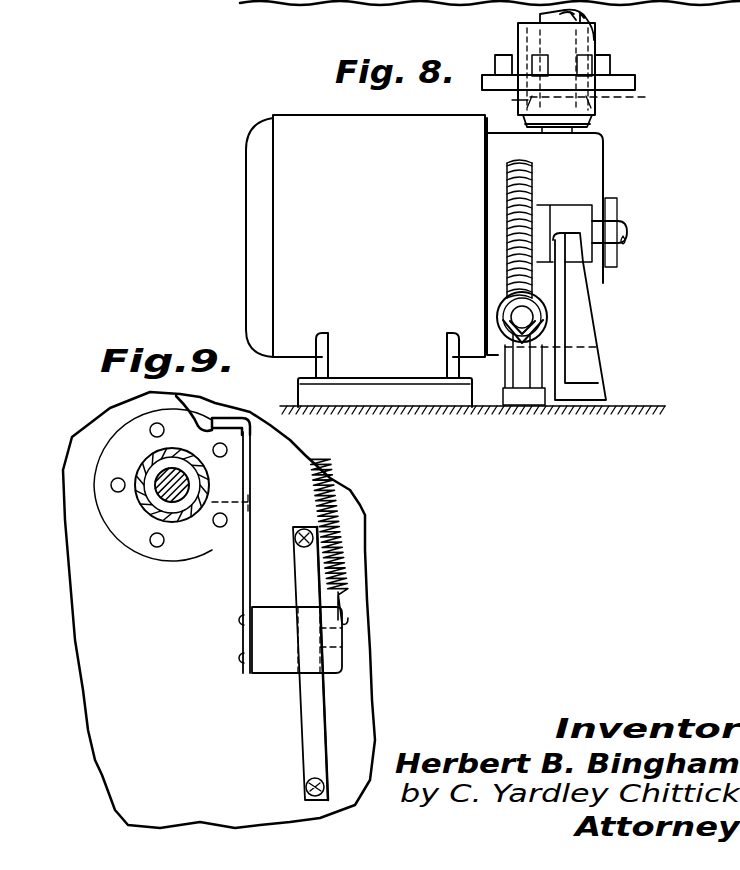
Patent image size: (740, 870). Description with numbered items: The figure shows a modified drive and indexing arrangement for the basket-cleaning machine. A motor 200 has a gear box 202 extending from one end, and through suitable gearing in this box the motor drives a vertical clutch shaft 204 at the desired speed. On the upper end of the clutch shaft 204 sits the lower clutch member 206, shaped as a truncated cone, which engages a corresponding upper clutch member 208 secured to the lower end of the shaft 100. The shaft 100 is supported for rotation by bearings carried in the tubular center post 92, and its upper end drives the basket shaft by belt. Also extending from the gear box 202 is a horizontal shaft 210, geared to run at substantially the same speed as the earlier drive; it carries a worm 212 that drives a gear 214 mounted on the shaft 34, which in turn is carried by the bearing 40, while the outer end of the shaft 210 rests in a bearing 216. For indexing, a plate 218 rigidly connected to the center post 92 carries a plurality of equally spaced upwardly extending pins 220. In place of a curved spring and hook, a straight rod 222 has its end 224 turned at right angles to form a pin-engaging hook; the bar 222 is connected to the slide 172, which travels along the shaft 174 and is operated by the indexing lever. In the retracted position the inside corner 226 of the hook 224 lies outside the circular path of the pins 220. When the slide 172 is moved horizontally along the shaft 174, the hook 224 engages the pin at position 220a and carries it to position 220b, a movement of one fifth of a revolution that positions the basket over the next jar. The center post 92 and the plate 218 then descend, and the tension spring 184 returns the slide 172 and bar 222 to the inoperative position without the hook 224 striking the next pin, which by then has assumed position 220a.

In FIG. 8, the shaft 34 is at (612, 228).
In FIG. 8, the bearing 40 is at (590, 366).
In FIG. 8, the center post 92 is at (597, 40).
In FIG. 9, the center post 92 is at (145, 460).
In FIG. 8, the shaft 100 is at (575, 14).
In FIG. 9, the shaft 100 is at (160, 492).
In FIG. 9, the slide 172 is at (275, 663).
In FIG. 9, the shaft 174 is at (310, 728).
In FIG. 9, the tension spring 184 is at (340, 515).
In FIG. 8, the motor 200 is at (290, 193).
In FIG. 8, the gear box 202 is at (600, 291).
In FIG. 8, the vertical clutch shaft 204 is at (580, 133).
In FIG. 8, the lower clutch member 206 is at (592, 120).
In FIG. 8, the upper clutch member 208 is at (605, 98).
In FIG. 8, the horizontal shaft 210 is at (527, 317).
In FIG. 8, the worm 212 is at (480, 302).
In FIG. 8, the gear 214 is at (505, 183).
In FIG. 8, the bearing 216 is at (511, 365).
In FIG. 8, the plate 218 is at (636, 84).
In FIG. 8, the pins 220 is at (612, 65).
In FIG. 9, the pins 220 is at (110, 485).
In FIG. 9, the pin position 220a is at (228, 450).
In FIG. 9, the pin position 220b is at (212, 530).
In FIG. 9, the straight rod 222 is at (247, 592).
In FIG. 9, the hook 224 is at (232, 410).
In FIG. 9, the inside corner 226 is at (185, 405).